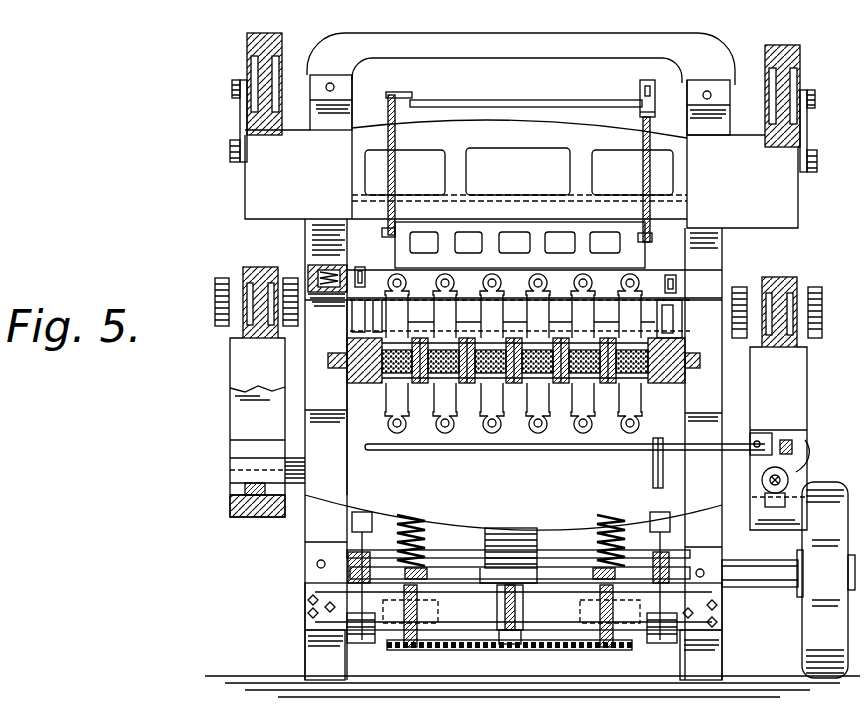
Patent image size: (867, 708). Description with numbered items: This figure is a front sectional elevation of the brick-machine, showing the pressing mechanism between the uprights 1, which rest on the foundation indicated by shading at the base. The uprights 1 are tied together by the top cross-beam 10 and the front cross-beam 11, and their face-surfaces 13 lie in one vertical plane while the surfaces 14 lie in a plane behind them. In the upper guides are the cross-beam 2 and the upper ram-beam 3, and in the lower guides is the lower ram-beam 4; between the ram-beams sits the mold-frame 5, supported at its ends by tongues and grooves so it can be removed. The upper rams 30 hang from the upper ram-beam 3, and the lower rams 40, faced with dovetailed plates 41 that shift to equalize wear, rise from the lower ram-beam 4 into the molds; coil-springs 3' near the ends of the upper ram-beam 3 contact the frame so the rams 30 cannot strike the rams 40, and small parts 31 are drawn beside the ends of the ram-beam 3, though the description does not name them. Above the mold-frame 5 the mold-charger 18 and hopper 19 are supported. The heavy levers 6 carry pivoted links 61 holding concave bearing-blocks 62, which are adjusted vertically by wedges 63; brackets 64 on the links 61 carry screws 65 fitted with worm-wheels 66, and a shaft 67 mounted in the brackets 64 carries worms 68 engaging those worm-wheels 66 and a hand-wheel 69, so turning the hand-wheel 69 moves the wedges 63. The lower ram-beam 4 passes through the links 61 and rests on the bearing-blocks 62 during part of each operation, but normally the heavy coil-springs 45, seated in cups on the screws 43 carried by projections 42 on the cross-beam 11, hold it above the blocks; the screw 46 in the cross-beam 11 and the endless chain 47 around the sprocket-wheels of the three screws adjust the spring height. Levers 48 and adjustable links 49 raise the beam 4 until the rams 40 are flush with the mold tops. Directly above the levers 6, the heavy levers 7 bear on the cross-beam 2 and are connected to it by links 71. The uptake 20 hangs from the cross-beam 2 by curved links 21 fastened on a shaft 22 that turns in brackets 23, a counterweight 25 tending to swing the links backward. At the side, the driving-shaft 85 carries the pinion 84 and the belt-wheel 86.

The uprights 1 is at (312, 105).
The cross-beam 2 is at (521, 151).
The upper ram-beam 3 is at (547, 297).
The coil-springs 3' is at (496, 297).
The lower ram-beam 4 is at (489, 415).
The mold-frame 5 is at (370, 383).
The heavy levers 6 is at (266, 272).
The heavy levers 7 is at (270, 34).
The top cross-beam 10 is at (521, 59).
The front cross-beam 11 is at (513, 606).
The face-surfaces 13 is at (322, 345).
The surfaces 14 is at (352, 93).
The mold-charger 18 is at (531, 322).
The hopper 19 is at (382, 234).
The uptake 20 is at (520, 245).
The curved links 21 is at (388, 172).
The shaft 22 is at (526, 94).
The brackets 23 is at (408, 120).
The counterweight 25 is at (640, 91).
The rams 30 is at (486, 323).
The small brackets 31 is at (360, 267).
The rams 40 is at (490, 390).
The plates 41 is at (400, 386).
The projections 42 is at (655, 612).
The screws 43 is at (416, 643).
The coil-springs 45 is at (427, 541).
The screw 46 is at (500, 590).
The endless chain 47 is at (540, 650).
The levers 48 is at (362, 644).
The adjustable links 49 is at (366, 548).
The links 61 is at (788, 530).
The bearing-blocks 62 is at (232, 469).
The wedges 63 is at (232, 490).
The brackets 64 is at (806, 462).
The screws 65 is at (762, 493).
The worm-wheels 66 is at (790, 480).
The shaft 67 is at (530, 442).
The worms 68 is at (796, 447).
The hand-wheel 69 is at (653, 442).
The links 71 is at (242, 119).
The pinion 84 is at (512, 540).
The driving-shaft 85 is at (736, 588).
The belt-wheel 86 is at (828, 580).